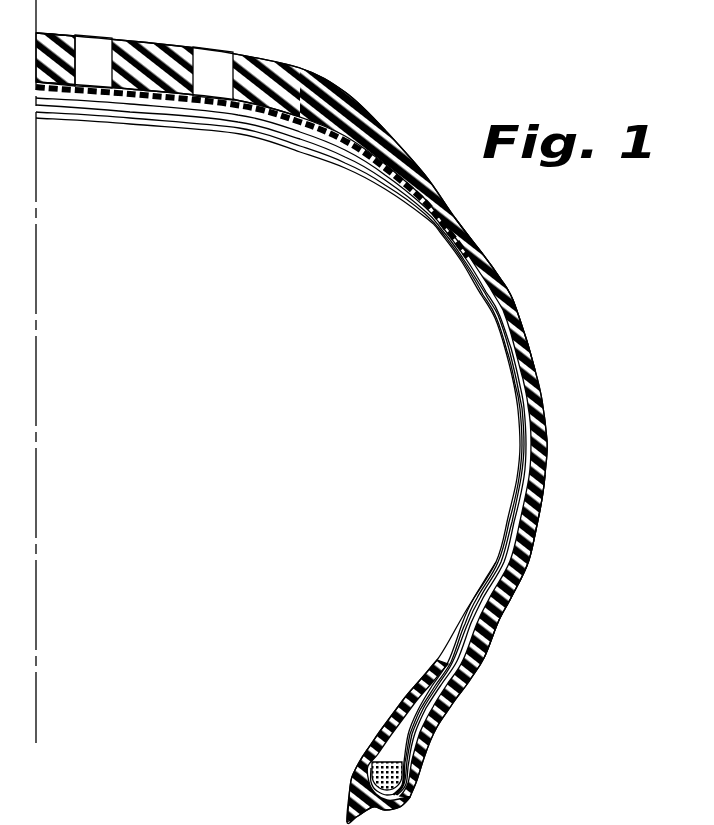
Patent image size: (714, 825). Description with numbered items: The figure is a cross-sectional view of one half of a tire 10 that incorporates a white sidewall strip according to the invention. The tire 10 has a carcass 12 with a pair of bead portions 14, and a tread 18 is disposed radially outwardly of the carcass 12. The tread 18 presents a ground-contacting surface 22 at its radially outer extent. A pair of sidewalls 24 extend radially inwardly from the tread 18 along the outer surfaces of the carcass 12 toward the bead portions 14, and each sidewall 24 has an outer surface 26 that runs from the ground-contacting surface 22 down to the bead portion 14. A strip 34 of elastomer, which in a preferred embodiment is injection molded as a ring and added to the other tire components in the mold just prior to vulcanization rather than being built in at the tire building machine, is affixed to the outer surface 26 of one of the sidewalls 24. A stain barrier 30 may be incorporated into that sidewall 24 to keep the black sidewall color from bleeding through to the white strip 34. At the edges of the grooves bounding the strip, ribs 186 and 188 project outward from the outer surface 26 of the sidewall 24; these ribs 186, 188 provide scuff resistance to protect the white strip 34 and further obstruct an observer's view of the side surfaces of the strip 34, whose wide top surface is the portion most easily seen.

The tire 10 is at (434, 142).
The carcass 12 is at (458, 255).
The bead portion 14 is at (400, 727).
The tread 18 is at (162, 57).
The ground-contacting surface 22 is at (57, 33).
The sidewall 24 is at (546, 407).
The outer surface 26 is at (514, 300).
The stain barrier 30 is at (501, 621).
The white sidewall strip 34 is at (538, 537).
The rib 186 is at (541, 497).
The rib 188 is at (511, 600).